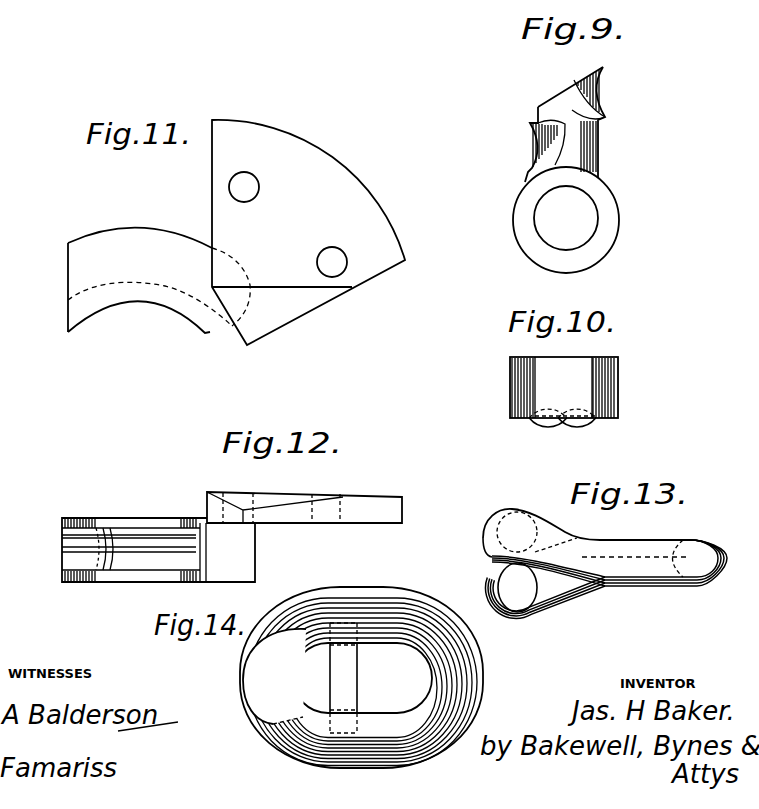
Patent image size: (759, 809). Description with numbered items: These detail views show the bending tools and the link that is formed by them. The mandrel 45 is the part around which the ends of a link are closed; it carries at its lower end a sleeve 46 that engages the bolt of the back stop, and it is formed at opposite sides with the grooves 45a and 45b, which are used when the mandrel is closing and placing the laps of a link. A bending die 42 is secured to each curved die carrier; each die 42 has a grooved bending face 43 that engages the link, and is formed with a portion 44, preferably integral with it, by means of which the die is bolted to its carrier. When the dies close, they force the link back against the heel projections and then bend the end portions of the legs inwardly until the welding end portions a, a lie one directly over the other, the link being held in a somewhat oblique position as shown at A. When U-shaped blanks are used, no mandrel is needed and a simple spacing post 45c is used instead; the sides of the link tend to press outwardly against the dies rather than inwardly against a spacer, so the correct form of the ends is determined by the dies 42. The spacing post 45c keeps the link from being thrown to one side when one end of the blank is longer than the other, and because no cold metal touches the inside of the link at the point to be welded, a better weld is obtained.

In FIG. 11, the bending die 42 is at (159, 280).
In FIG. 12, the bending die 42 is at (162, 515).
In FIG. 11, the grooved bending face 43 is at (151, 302).
In FIG. 12, the grooved bending face 43 is at (73, 545).
In FIG. 11, the bolting portion 44 is at (308, 232).
In FIG. 12, the bolting portion 44 is at (304, 507).
In FIG. 9, the mandrel 45 is at (598, 145).
In FIG. 10, the mandrel 45 is at (562, 398).
In FIG. 9, the groove 45a is at (604, 89).
In FIG. 9, the groove 45b is at (536, 147).
In FIG. 14, the spacing post 45c is at (352, 690).
In FIG. 9, the sleeve 46 is at (590, 210).
In FIG. 10, the sleeve 46 is at (618, 382).
In FIG. 13, the welding end portions a is at (482, 585).
In FIG. 13, the oblique link position A is at (617, 609).
In FIG. 14, the oblique link position A is at (365, 598).